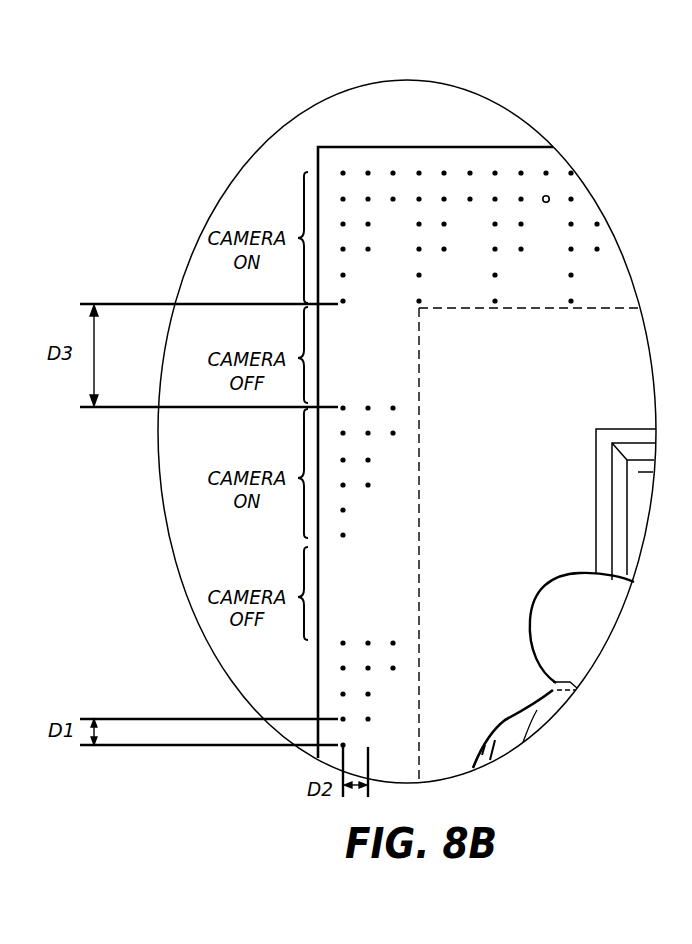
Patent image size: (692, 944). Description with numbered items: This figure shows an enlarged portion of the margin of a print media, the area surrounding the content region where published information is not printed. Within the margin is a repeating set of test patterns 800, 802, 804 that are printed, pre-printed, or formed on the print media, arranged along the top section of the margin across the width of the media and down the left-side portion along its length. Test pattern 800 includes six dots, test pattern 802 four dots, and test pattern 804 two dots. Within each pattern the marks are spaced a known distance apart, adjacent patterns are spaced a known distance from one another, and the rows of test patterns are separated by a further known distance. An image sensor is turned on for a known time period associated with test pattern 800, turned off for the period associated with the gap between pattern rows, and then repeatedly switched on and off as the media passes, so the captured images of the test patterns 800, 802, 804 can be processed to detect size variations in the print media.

The test pattern 800 is at (343, 166).
The test pattern 802 is at (368, 166).
The test pattern 804 is at (393, 166).